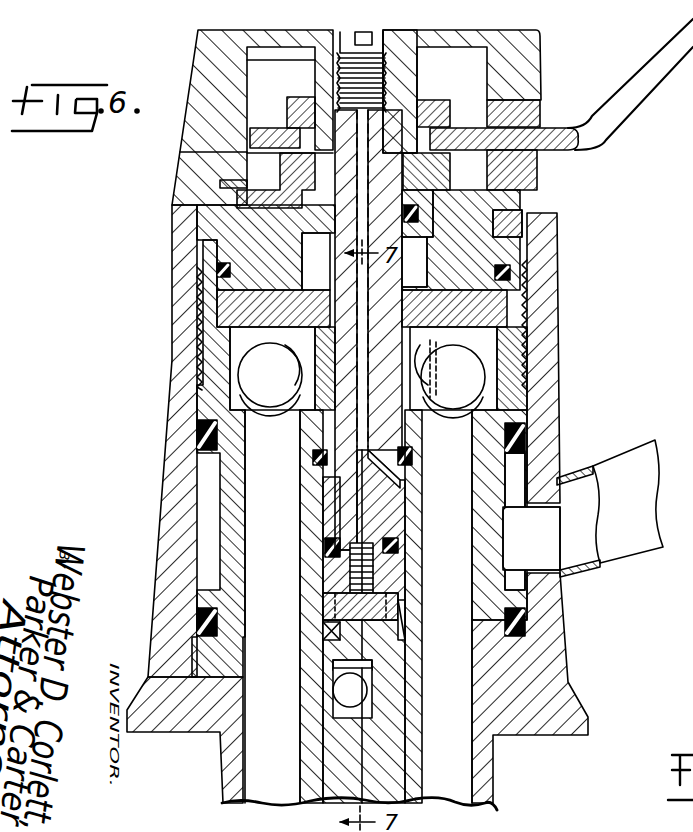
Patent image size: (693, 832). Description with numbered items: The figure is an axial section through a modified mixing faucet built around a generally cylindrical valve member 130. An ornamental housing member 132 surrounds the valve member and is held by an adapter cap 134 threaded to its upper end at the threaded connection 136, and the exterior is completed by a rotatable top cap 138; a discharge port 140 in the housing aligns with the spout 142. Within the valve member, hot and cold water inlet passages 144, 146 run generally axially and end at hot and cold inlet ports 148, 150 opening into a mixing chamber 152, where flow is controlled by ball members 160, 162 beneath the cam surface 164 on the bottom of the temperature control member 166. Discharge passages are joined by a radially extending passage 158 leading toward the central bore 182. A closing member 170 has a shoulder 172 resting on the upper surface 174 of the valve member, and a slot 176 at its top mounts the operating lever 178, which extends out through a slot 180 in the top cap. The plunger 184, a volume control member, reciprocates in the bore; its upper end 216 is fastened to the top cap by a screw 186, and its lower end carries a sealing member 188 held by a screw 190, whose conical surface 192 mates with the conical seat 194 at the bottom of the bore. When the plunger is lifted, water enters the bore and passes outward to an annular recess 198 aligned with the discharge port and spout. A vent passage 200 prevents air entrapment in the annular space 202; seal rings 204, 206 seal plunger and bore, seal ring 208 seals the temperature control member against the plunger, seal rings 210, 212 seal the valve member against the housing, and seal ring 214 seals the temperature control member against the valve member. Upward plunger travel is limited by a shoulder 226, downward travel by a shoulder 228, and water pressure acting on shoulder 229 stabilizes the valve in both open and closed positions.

The valve member 130 is at (217, 743).
The ornamental housing member 132 is at (162, 498).
The adapter cap 134 is at (230, 200).
The threaded connection 136 is at (250, 333).
The top cap 138 is at (196, 60).
The discharge port 140 is at (547, 553).
The spout 142 is at (628, 460).
The hot water inlet passage 144 is at (267, 790).
The cold water inlet passage 146 is at (468, 818).
The hot water inlet port 148 is at (240, 392).
The cold water inlet port 150 is at (487, 405).
The mixing chamber 152 is at (477, 372).
The radially extending passage 158 is at (350, 690).
The ball member 160 is at (245, 385).
The ball member 162 is at (487, 400).
The cam surface 164 is at (250, 363).
The temperature control member 166 is at (490, 340).
The closing member 170 is at (210, 185).
The shoulder 172 is at (217, 240).
The upper surface 174 is at (210, 257).
The slot 176 is at (287, 135).
The operating lever 178 is at (647, 90).
The slot 180 is at (543, 118).
The central bore 182 is at (397, 573).
The plunger 184 is at (407, 425).
The screw 186 is at (400, 33).
The sealing member 188 is at (397, 615).
The screw 190 is at (347, 648).
The conical surface 192 is at (412, 656).
The conical seat 194 is at (327, 632).
The annular recess 198 is at (520, 482).
The vent passage 200 is at (317, 460).
The annular space 202 is at (412, 507).
The seal ring 204 is at (400, 543).
The seal ring 206 is at (412, 457).
The seal ring 208 is at (527, 192).
The seal ring 210 is at (520, 627).
The seal ring 212 is at (198, 436).
The seal ring 214 is at (500, 305).
The upper end of plunger 216 is at (326, 32).
The shoulder 226 is at (420, 240).
The shoulder 228 is at (313, 480).
The shoulder 229 is at (425, 267).